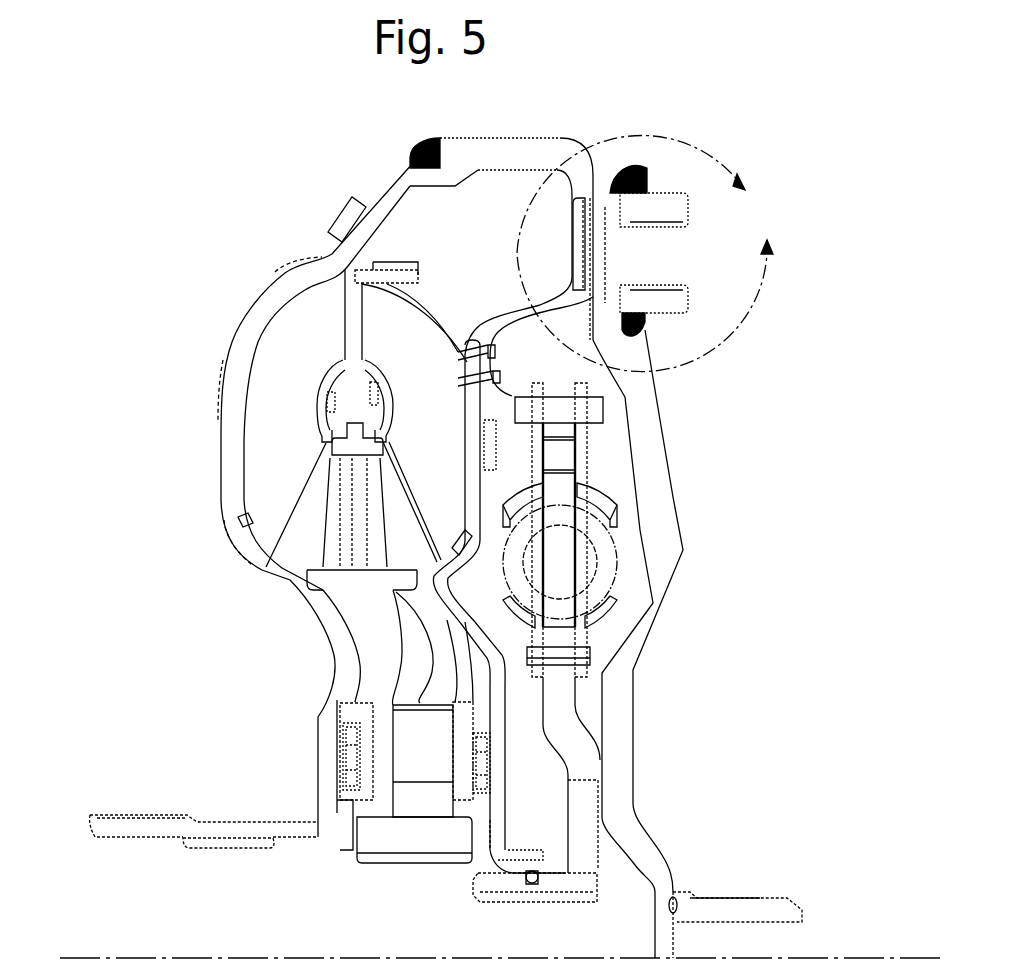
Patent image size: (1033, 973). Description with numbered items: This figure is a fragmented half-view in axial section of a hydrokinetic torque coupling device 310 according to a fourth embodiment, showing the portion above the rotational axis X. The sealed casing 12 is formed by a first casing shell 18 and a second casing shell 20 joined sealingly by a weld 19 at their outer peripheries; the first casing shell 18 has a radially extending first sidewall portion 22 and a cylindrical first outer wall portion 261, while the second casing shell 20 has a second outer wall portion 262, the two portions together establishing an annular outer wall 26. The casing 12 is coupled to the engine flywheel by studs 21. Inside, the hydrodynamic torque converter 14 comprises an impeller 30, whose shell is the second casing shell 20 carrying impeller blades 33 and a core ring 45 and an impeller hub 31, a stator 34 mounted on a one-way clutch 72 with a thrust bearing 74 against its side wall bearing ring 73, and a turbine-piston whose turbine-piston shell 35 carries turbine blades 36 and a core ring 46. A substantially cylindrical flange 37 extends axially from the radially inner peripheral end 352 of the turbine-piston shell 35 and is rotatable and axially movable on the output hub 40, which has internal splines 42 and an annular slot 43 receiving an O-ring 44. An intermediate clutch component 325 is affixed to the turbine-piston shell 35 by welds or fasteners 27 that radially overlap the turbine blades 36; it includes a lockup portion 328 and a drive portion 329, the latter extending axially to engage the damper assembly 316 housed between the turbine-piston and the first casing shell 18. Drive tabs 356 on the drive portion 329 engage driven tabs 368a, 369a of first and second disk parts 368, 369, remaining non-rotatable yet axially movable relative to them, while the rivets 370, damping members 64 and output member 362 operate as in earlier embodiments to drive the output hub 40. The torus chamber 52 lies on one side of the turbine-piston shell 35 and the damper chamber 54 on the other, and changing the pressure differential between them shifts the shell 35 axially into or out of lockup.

The rotational axis X is at (92, 954).
The sealed casing 12 is at (545, 125).
The hydrodynamic torque converter 14 is at (203, 386).
The first casing shell 18 is at (636, 721).
The weld 19 is at (421, 148).
The second casing shell 20 is at (368, 216).
The studs 21 is at (660, 273).
The first sidewall portion 22 is at (596, 253).
The annular outer wall 26 is at (470, 137).
The first outer wall portion 261 is at (512, 150).
The second outer wall portion 262 is at (388, 192).
The welds or fasteners 27 is at (459, 378).
The impeller 30 is at (245, 478).
The impeller hub 31 is at (230, 827).
The impeller blades 33 is at (285, 508).
The stator 34 is at (353, 552).
The turbine-piston shell 35 is at (473, 401).
The radially inner peripheral end 352 is at (545, 858).
The turbine blades 36 is at (445, 508).
The substantially cylindrical flange 37 is at (512, 850).
The output hub 40 is at (506, 882).
The internal splines 42 is at (566, 902).
The annular slot 43 is at (531, 884).
The O-ring 44 is at (532, 877).
The core ring 45 is at (331, 383).
The core ring 46 is at (386, 367).
The torus chamber 52 is at (342, 422).
The damper chamber 54 is at (632, 590).
The damping members 64 is at (608, 574).
The one-way clutch 72 is at (425, 730).
The side wall bearing ring 73 is at (364, 715).
The thrust bearing 74 is at (350, 756).
The hydrokinetic torque coupling device 310 is at (729, 114).
The damper assembly 316 is at (622, 540).
The intermediate clutch component 325 is at (488, 296).
The lockup portion 328 is at (572, 235).
The drive portion 329 is at (505, 409).
The drive tabs 356 is at (598, 411).
The output member 362 is at (570, 739).
The first disk part 368 is at (510, 488).
The driven tabs 368a is at (536, 386).
The second disk part 369 is at (583, 459).
The driven tabs 369a is at (607, 387).
The rivets 370 is at (585, 641).